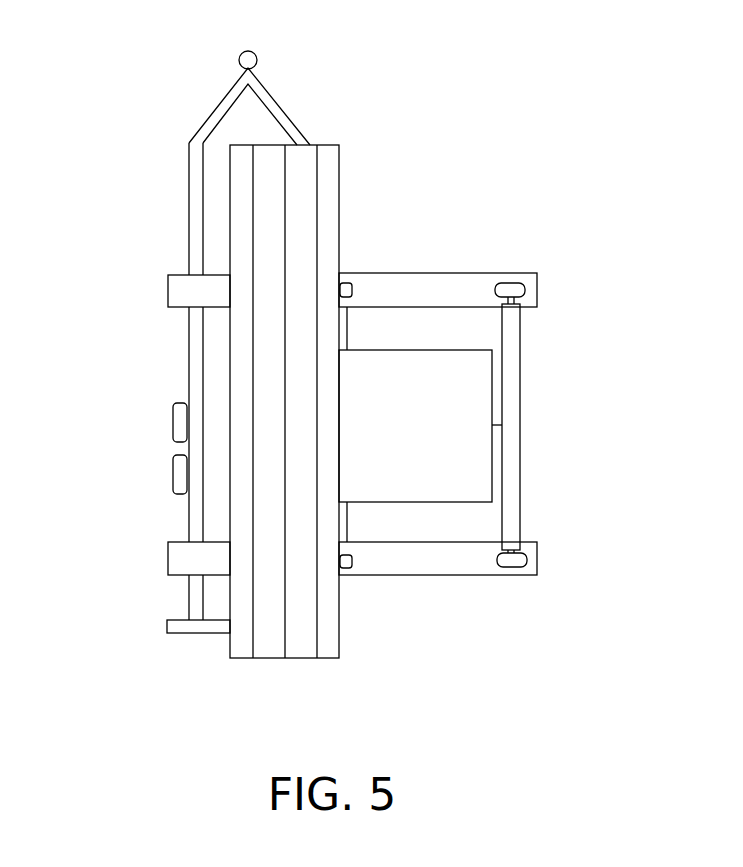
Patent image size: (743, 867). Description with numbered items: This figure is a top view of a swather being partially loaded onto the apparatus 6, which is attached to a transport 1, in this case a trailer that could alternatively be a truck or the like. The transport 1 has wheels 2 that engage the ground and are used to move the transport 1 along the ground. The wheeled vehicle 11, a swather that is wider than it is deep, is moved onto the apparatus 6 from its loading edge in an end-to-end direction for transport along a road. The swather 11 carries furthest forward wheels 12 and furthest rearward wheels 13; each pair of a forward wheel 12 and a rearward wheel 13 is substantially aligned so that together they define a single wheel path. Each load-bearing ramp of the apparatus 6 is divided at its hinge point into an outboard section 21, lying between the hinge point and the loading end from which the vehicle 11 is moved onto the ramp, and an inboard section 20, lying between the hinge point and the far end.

The transport 1 is at (278, 105).
The wheels 2 is at (173, 422).
The apparatus 6 is at (587, 374).
The wheeled vehicle 11 is at (415, 426).
The furthest forward wheels 12 is at (345, 285).
The furthest rearward wheels 13 is at (502, 287).
The inboard section 20 is at (340, 665).
The outboard section 21 is at (340, 665).